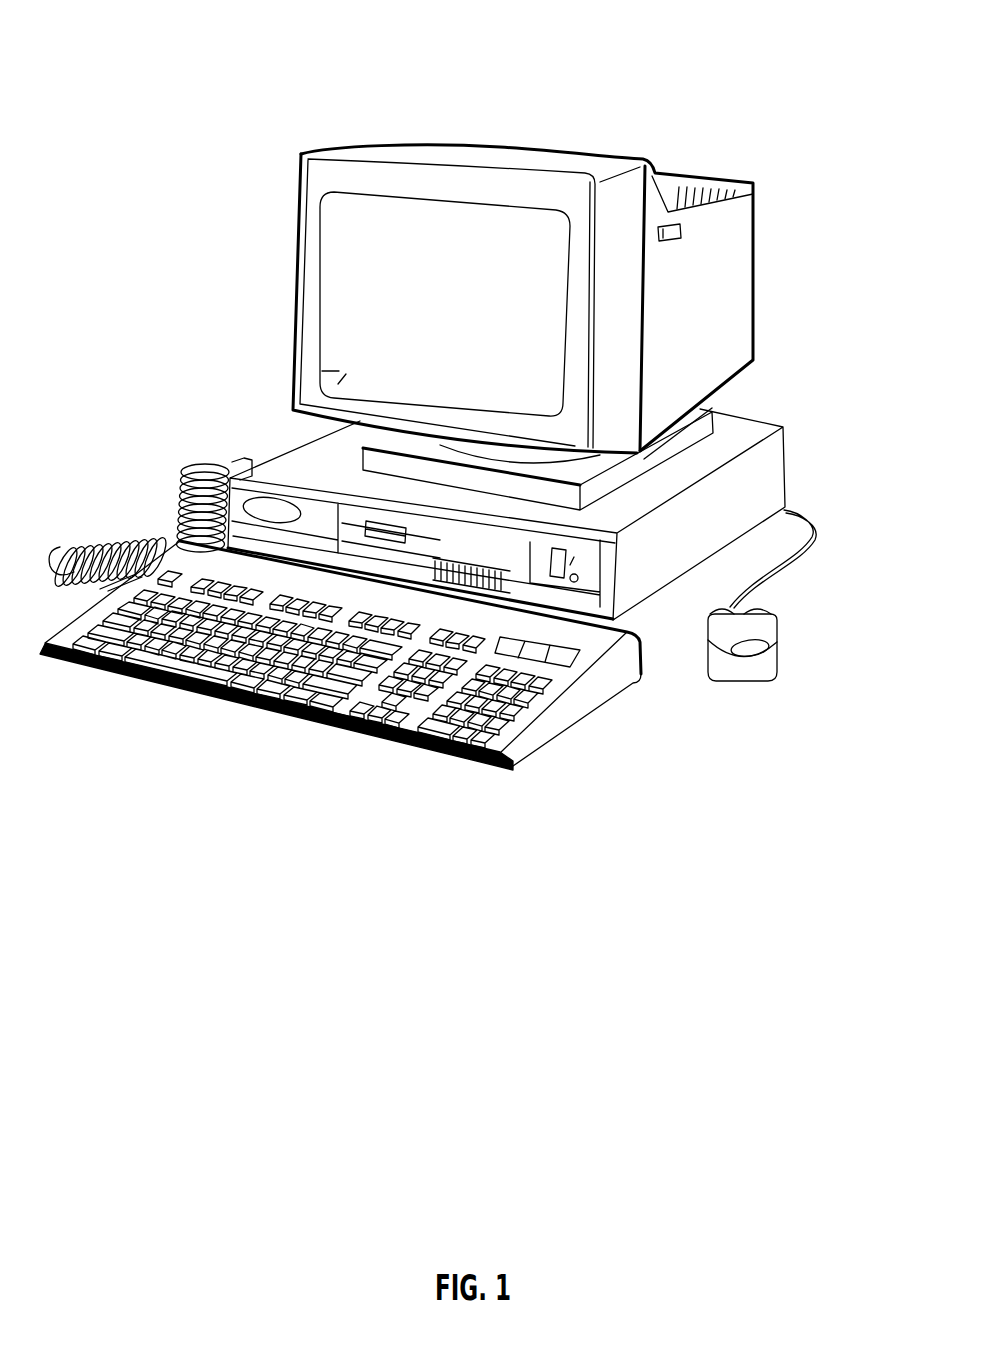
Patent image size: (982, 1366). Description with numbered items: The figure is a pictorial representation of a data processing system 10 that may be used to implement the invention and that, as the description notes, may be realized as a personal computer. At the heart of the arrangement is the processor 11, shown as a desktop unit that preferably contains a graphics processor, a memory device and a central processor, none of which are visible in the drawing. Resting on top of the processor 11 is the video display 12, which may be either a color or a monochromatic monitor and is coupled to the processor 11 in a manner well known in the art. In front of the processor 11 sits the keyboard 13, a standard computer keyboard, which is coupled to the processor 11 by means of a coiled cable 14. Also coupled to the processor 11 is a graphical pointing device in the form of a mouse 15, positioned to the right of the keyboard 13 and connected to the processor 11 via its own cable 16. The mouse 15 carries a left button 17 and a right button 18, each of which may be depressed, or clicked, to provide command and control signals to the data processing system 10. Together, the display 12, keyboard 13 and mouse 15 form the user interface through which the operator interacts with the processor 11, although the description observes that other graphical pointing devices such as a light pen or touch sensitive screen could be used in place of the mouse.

The data processing system 10 is at (634, 108).
The processor 11 is at (772, 460).
The video display 12 is at (292, 287).
The keyboard 13 is at (338, 730).
The cable 14 is at (190, 482).
The mouse 15 is at (760, 682).
The cable 16 is at (790, 558).
The left button 17 is at (715, 613).
The right button 18 is at (760, 613).